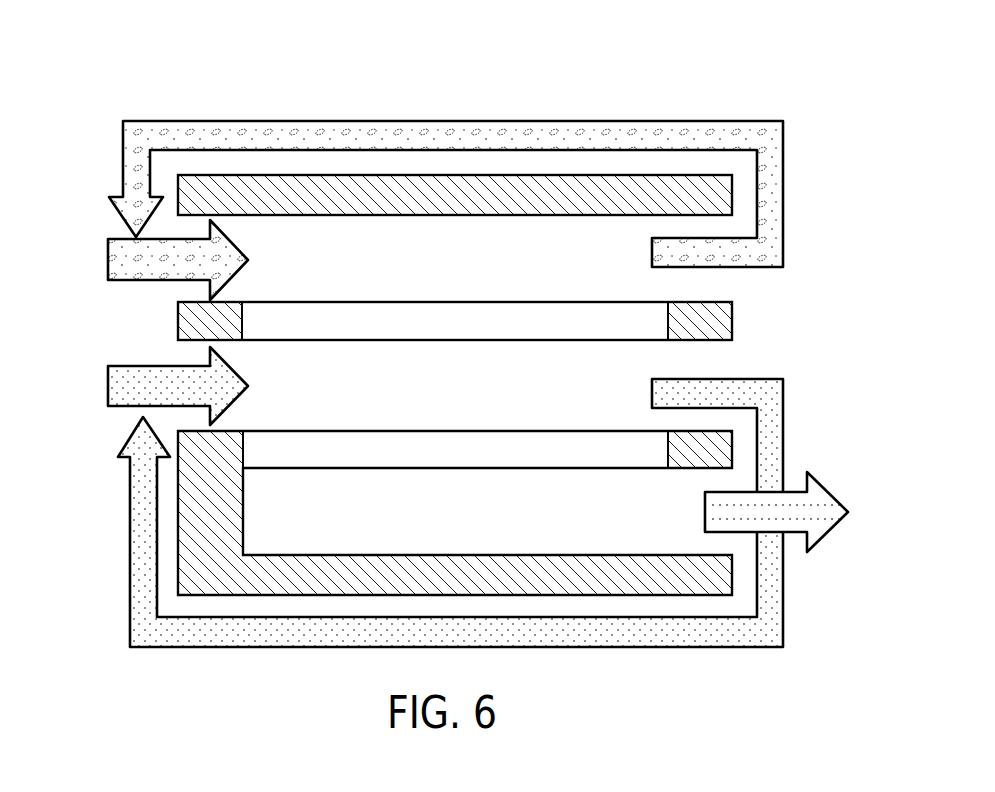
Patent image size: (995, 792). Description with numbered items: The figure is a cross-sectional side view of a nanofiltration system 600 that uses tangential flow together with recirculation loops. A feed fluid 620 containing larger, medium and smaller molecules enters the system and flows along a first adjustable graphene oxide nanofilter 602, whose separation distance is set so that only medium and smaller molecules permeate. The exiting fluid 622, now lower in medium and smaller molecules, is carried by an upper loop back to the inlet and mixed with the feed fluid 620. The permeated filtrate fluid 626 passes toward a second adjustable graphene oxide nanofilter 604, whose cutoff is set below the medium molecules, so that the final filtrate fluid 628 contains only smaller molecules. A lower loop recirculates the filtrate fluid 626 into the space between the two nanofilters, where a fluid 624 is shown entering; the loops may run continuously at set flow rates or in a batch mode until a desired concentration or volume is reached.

The nanofiltration system 600 is at (453, 328).
The adjustable graphene oxide nanofilter 602 is at (467, 308).
The adjustable graphene oxide nanofilter 604 is at (425, 437).
The feed fluid 620 is at (120, 260).
The exiting fluid 622 is at (772, 250).
The second fluid inlet flow 624 is at (120, 385).
The filtrate fluid 626 is at (770, 395).
The filtrate fluid 628 is at (767, 513).